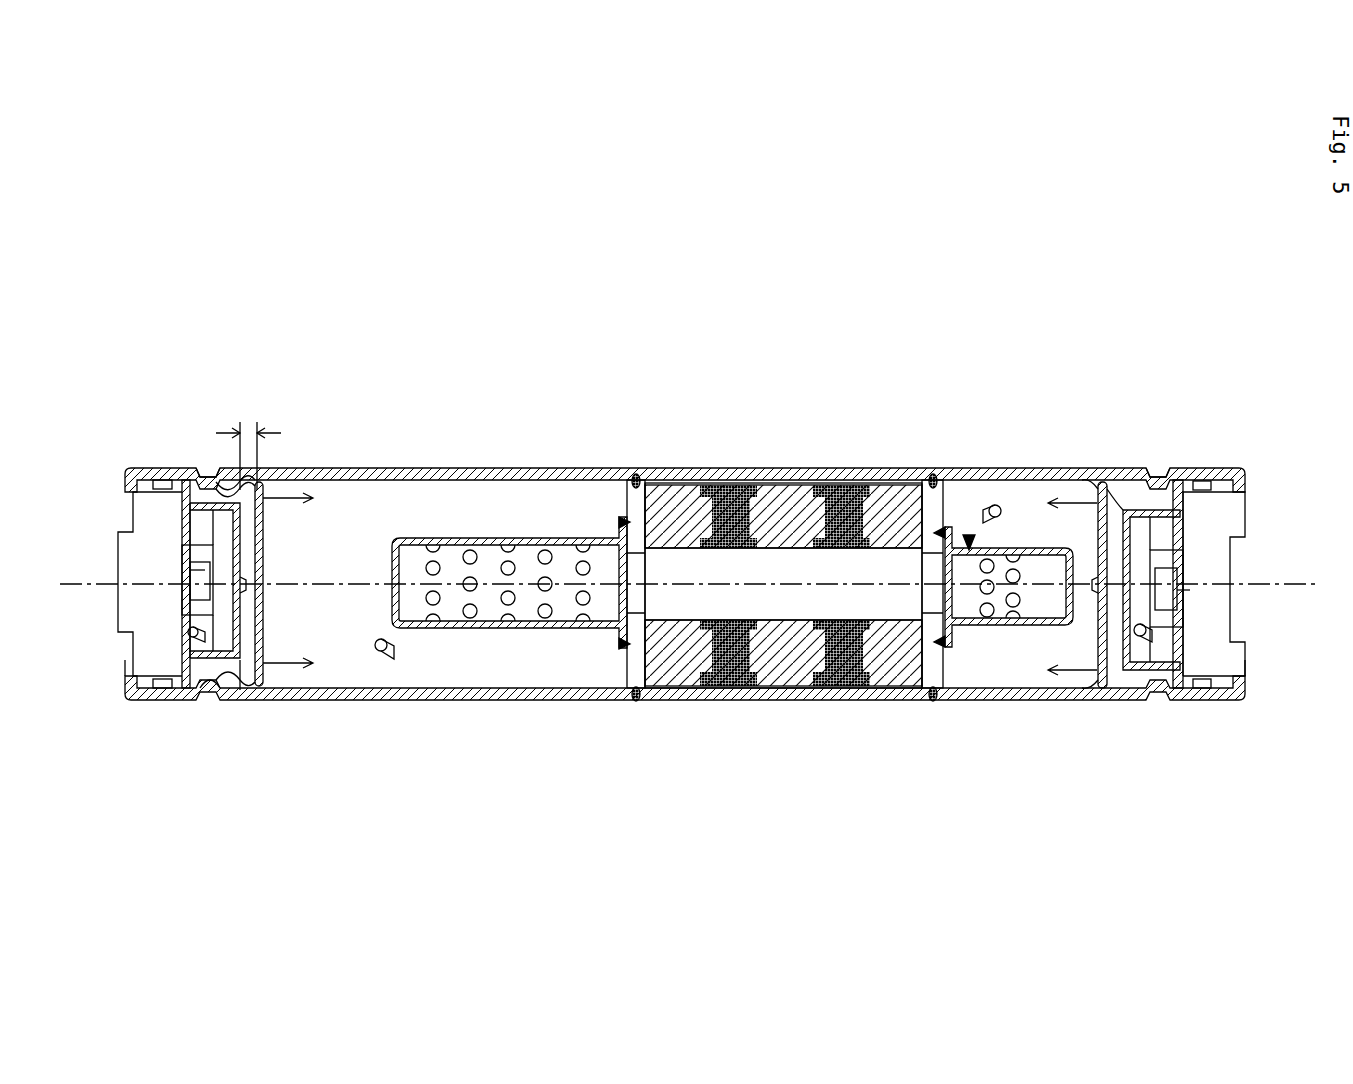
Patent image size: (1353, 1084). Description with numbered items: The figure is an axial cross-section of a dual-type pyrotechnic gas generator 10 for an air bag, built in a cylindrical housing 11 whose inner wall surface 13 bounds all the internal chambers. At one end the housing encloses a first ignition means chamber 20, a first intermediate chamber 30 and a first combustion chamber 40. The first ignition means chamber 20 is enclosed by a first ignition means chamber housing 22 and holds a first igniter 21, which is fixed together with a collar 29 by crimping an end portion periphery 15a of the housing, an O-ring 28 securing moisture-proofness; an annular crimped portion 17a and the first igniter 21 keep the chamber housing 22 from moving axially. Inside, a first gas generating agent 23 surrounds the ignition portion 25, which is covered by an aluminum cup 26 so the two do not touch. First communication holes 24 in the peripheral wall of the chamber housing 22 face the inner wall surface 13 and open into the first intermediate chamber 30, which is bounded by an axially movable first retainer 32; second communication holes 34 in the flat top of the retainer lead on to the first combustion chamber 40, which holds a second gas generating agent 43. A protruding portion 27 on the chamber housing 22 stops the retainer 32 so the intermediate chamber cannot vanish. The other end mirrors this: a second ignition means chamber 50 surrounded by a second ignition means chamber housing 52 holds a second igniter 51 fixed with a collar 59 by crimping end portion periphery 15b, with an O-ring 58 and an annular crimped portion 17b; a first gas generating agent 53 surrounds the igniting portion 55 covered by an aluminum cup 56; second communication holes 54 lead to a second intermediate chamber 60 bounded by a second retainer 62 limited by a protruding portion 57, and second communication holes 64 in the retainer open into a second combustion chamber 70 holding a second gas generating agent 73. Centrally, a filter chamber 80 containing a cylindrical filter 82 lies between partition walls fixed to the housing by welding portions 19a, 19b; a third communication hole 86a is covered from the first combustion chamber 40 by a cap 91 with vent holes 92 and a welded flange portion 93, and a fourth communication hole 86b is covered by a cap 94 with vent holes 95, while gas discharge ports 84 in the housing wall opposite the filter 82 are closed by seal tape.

The pneumatic actuator assembly 10 is at (582, 428).
The cylindrical housing 11 is at (404, 467).
The inner wall surface 13 is at (490, 700).
The end portion periphery 15a is at (125, 484).
The end portion periphery 15b is at (1246, 490).
The annular crimped portion 17a is at (206, 470).
The annular crimped portion 17b is at (1154, 470).
The welding portion 19a is at (638, 470).
The welding portion 19b is at (930, 470).
The first ignition means chamber 20 is at (190, 520).
The first igniter 21 is at (136, 598).
The first ignition means chamber housing 22 is at (214, 700).
The first gas generating agent 23 is at (155, 660).
The first communication holes 24 is at (205, 697).
The ignition portion 25 is at (190, 575).
The aluminum cup 26 is at (188, 628).
The protruding portion 27 is at (246, 586).
The O-ring 28 is at (160, 690).
The collar 29 is at (125, 675).
The first intermediate chamber 30 is at (243, 700).
The first retainer 32 is at (265, 562).
The second communication holes 34 is at (265, 522).
The first combustion chamber 40 is at (395, 518).
The second gas generating agent 43 is at (388, 660).
The second ignition means chamber 50 is at (1218, 492).
The second igniter 51 is at (1200, 593).
The second ignition means chamber housing 52 is at (1106, 690).
The first gas generating agent 53 is at (1150, 632).
The second communication holes 54 is at (1152, 695).
The igniting portion 55 is at (1183, 590).
The aluminum cup 56 is at (1195, 552).
The protruding portion 57 is at (1094, 580).
The O-ring 58 is at (1200, 695).
The collar 59 is at (1242, 690).
The second intermediate chamber 60 is at (1115, 495).
The second retainer 62 is at (1080, 478).
The second communication holes 64 is at (1100, 692).
The second combustion chamber 70 is at (1003, 603).
The second gas generating agent 73 is at (985, 500).
The filter chamber 80 is at (787, 603).
The cylindrical filter 82 is at (770, 700).
The gas discharge ports 84 is at (785, 470).
The third communication hole 86a is at (650, 600).
The fourth communication hole 86b is at (930, 580).
The cap 91 is at (509, 534).
The vent holes 92 is at (460, 536).
The flange portion 93 is at (618, 646).
The cap 94 is at (969, 535).
The vent holes 95 is at (1016, 604).